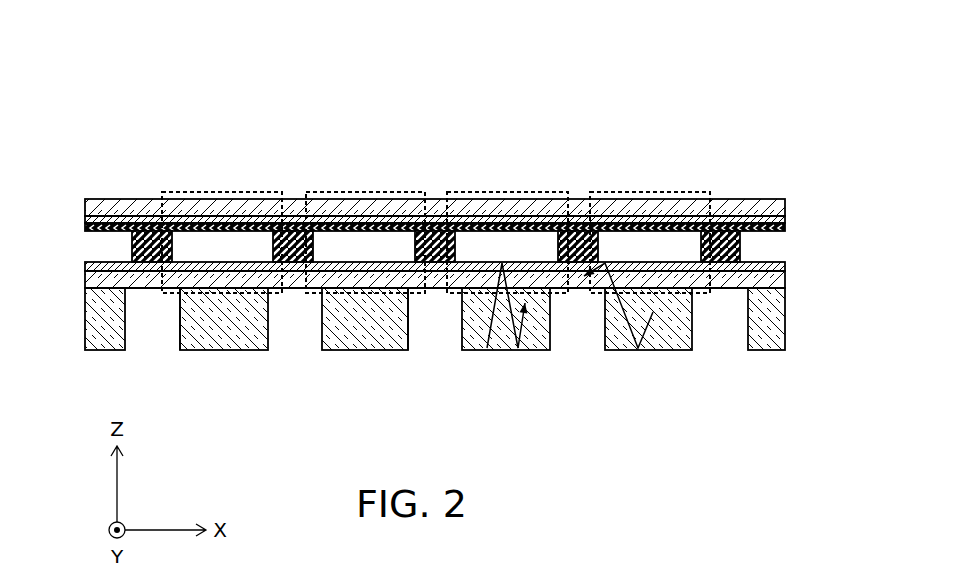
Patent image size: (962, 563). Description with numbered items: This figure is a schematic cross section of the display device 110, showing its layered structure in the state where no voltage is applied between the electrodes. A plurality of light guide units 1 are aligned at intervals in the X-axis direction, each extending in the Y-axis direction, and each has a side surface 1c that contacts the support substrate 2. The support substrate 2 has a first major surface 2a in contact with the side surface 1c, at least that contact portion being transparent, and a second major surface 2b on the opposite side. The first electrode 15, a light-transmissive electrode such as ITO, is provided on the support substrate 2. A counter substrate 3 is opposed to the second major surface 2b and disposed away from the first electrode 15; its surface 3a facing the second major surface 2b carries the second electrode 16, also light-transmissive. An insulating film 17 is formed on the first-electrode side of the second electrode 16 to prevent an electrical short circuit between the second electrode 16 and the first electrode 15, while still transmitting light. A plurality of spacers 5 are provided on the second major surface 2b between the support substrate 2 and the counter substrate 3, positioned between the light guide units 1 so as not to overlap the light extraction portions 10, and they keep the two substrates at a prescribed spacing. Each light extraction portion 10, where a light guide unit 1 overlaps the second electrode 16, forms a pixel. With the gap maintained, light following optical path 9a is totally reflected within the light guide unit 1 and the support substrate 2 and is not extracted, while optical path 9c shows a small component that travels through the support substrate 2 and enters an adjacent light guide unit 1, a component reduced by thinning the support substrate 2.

The display device 110 is at (678, 98).
The light guide unit 1 is at (222, 332).
The side surface 1c is at (201, 288).
The support substrate 2 is at (92, 278).
The first major surface 2a is at (727, 290).
The second major surface 2b is at (764, 265).
The counter substrate 3 is at (115, 207).
The surface 3a is at (752, 216).
The spacer 5 is at (143, 243).
The optical path 9a is at (528, 335).
The optical path 9c is at (636, 337).
The light extraction portion 10 is at (236, 192).
The first electrode 15 is at (92, 267).
The second electrode 16 is at (92, 219).
The insulating film 17 is at (92, 228).